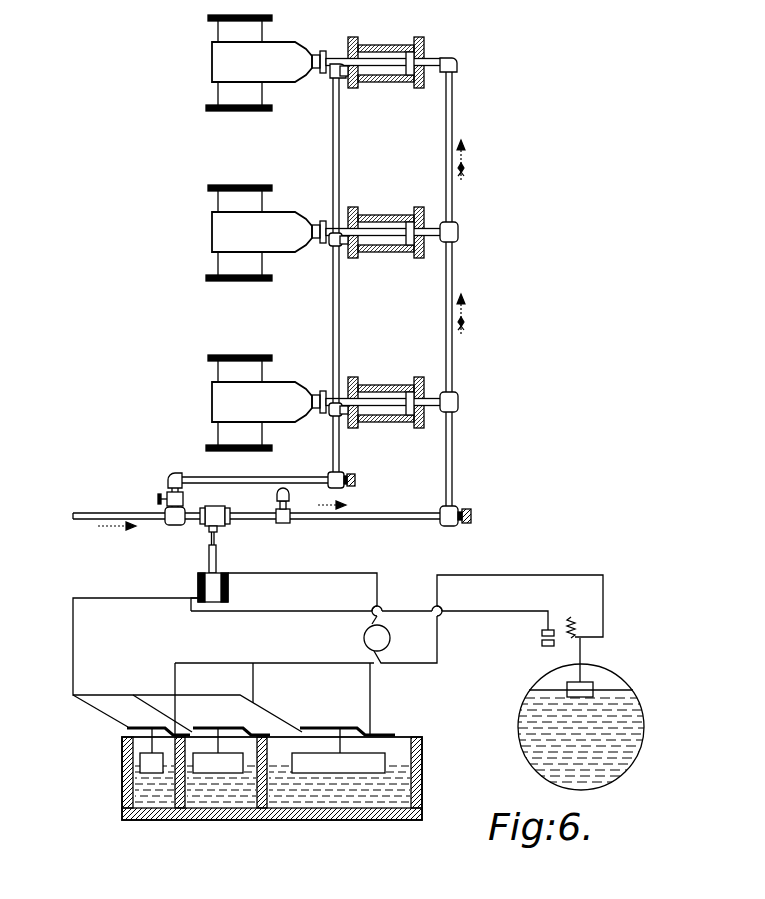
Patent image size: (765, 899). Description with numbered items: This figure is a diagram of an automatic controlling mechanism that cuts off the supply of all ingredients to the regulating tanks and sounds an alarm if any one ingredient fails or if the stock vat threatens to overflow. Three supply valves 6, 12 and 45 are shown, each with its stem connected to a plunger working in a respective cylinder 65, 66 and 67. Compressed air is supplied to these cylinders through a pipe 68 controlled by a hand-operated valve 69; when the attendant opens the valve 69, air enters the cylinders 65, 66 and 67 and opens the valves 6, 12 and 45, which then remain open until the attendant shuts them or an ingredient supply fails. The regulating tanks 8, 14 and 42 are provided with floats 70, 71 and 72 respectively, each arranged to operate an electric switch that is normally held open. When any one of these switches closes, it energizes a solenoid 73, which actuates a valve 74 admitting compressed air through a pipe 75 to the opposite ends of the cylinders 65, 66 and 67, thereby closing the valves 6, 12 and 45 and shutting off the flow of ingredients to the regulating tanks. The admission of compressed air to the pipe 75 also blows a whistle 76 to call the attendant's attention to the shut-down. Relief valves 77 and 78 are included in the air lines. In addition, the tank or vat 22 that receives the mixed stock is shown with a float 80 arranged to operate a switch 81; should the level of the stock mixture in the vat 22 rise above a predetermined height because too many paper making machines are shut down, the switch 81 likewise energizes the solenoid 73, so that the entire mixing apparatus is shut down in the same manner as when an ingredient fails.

The valve 45 is at (226, 38).
The cylinder 67 is at (393, 70).
The valve 12 is at (239, 233).
The cylinder 66 is at (384, 220).
The valve 6 is at (237, 403).
The cylinder 65 is at (384, 387).
The pipe 75 is at (450, 460).
The relief valve 77 is at (464, 507).
The pipe 68 is at (262, 478).
The relief valve 78 is at (352, 483).
The hand-operated valve 69 is at (165, 497).
The valve 74 is at (217, 525).
The whistle 76 is at (271, 505).
The solenoid 73 is at (198, 582).
The switch 81 is at (543, 646).
The float 80 is at (596, 686).
The tank or vat 22 is at (606, 741).
The regulating tank 8 is at (340, 820).
The regulating tank 14 is at (210, 815).
The regulating tank 42 is at (130, 817).
The float 72 is at (133, 757).
The float 71 is at (231, 750).
The float 70 is at (378, 758).